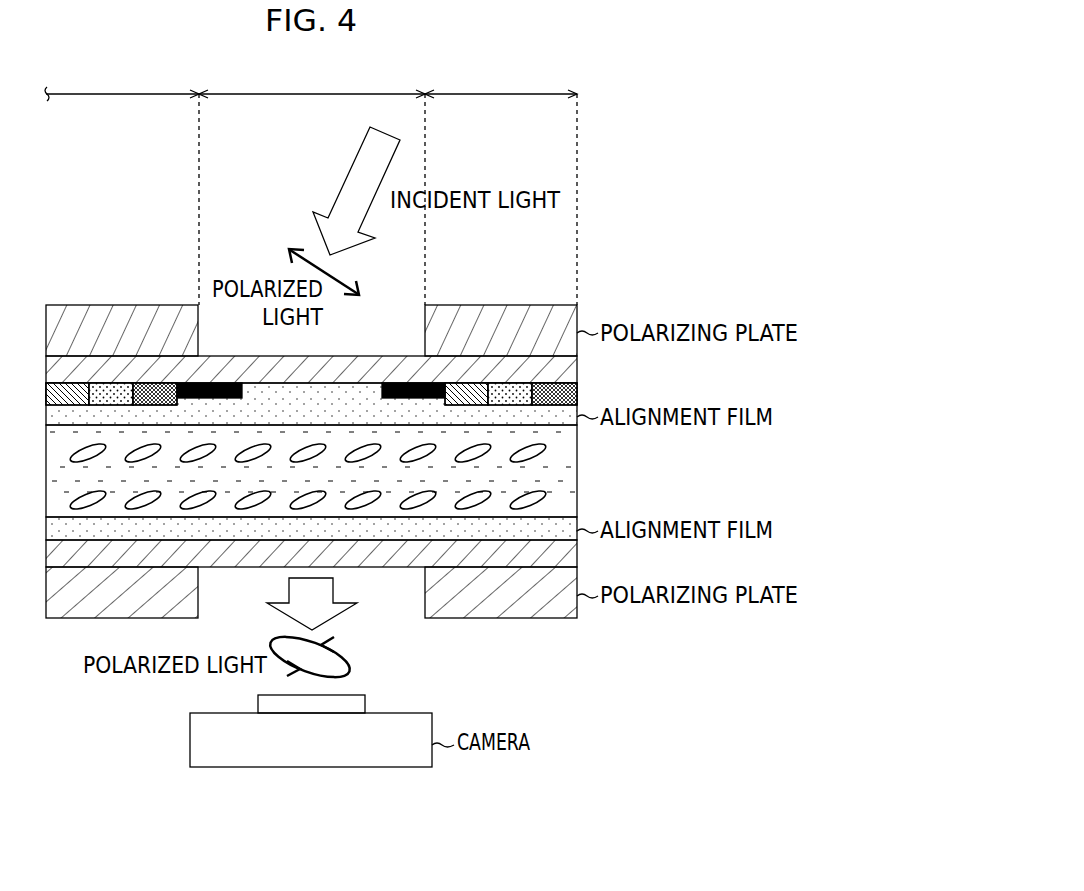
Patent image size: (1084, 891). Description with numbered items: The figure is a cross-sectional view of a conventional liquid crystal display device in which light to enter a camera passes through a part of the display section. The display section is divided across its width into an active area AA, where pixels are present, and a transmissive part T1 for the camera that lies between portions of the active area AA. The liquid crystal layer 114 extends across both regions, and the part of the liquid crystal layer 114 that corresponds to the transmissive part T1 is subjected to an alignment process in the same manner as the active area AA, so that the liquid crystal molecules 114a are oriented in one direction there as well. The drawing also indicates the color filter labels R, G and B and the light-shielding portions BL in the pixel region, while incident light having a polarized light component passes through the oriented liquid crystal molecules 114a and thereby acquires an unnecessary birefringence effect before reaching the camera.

The liquid crystal layer 114 is at (577, 460).
The liquid crystal molecules 114a is at (548, 494).
The red color filter R is at (72, 388).
The green color filter G is at (115, 390).
The blue color filter B is at (158, 392).
The black matrix (light shielding layer) BL is at (220, 388).
The active area AA is at (311, 82).
The transmissive part T1 is at (312, 184).